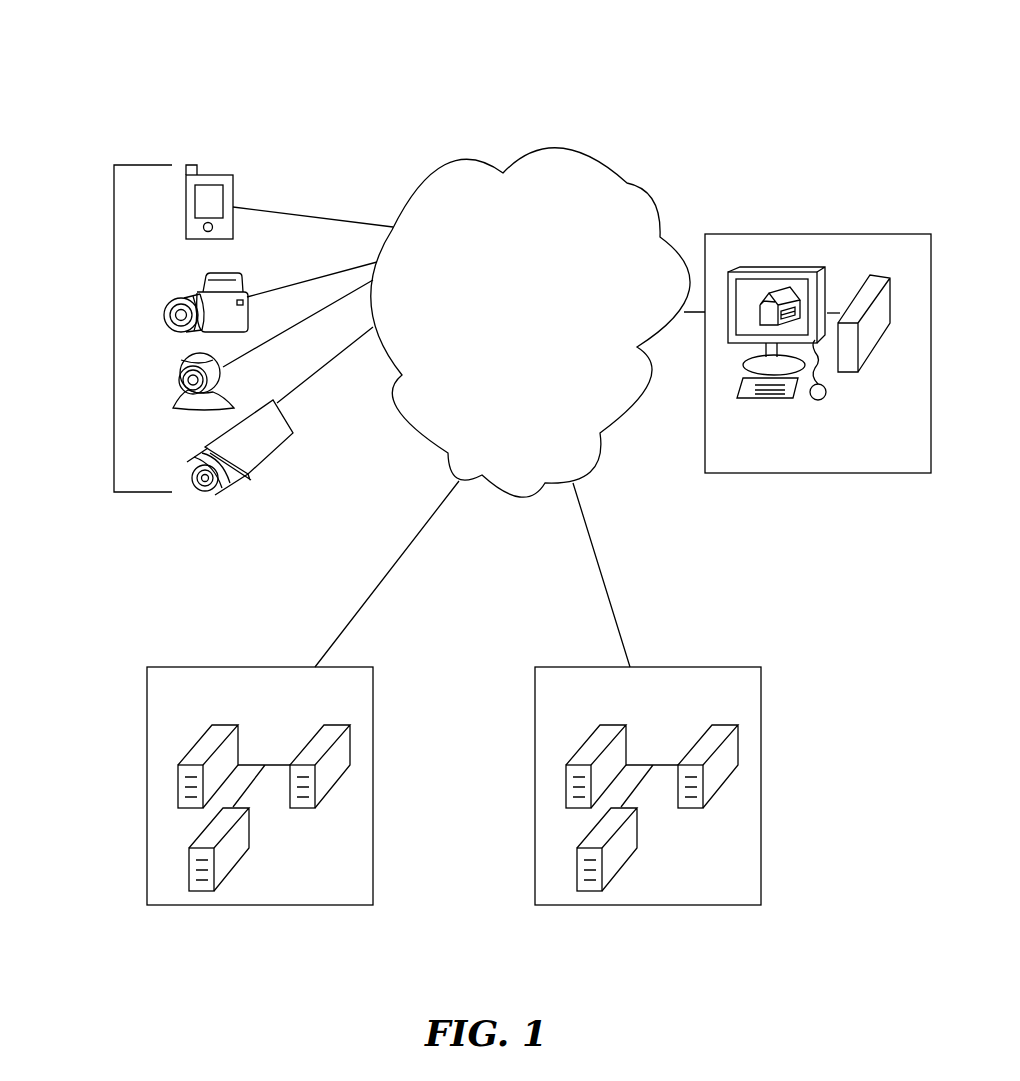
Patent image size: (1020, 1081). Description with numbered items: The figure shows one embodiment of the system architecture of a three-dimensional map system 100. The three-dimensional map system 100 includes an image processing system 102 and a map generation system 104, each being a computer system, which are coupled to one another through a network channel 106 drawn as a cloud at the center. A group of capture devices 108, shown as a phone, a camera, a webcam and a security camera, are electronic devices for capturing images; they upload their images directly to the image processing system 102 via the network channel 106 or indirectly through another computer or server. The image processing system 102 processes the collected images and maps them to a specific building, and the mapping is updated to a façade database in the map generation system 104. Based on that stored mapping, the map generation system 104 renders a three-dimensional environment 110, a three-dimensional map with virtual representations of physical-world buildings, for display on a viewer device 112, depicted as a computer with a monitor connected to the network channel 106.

The three-dimensional map system 100 is at (72, 63).
The image processing system 102 is at (280, 893).
The map generation system 104 is at (668, 893).
The network channel 106 is at (547, 474).
The capture devices 108 is at (113, 328).
The 3D environment 110 is at (753, 293).
The viewer device 112 is at (838, 463).